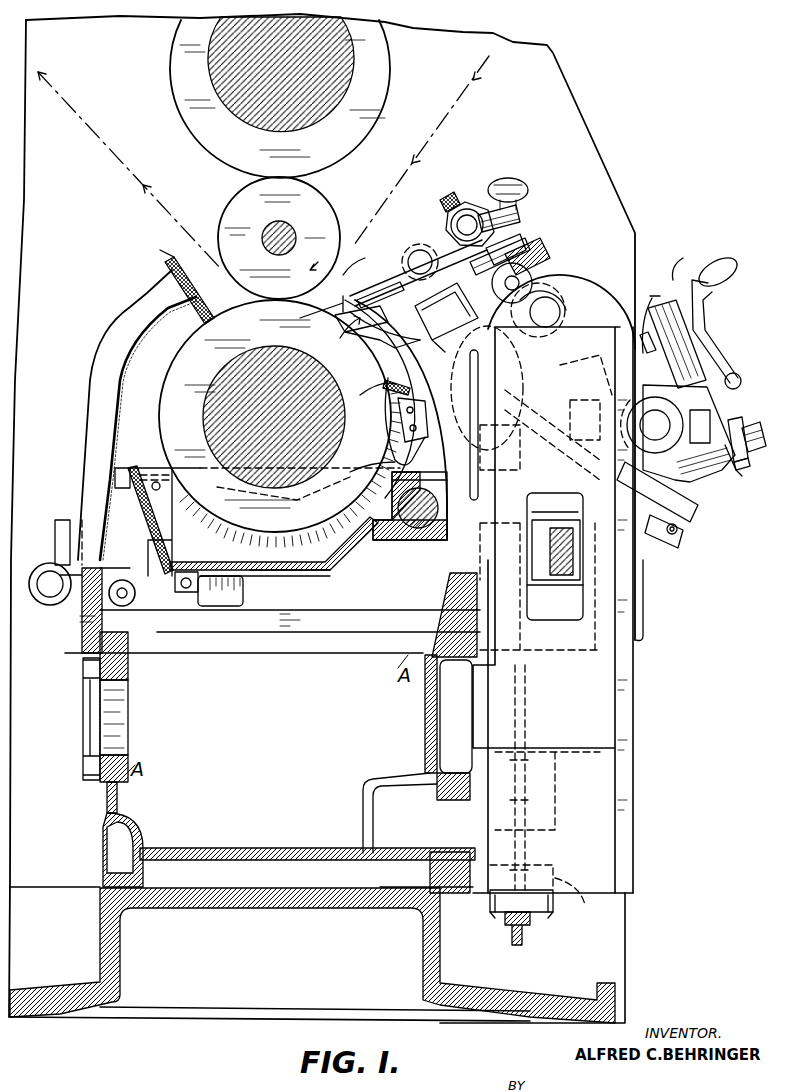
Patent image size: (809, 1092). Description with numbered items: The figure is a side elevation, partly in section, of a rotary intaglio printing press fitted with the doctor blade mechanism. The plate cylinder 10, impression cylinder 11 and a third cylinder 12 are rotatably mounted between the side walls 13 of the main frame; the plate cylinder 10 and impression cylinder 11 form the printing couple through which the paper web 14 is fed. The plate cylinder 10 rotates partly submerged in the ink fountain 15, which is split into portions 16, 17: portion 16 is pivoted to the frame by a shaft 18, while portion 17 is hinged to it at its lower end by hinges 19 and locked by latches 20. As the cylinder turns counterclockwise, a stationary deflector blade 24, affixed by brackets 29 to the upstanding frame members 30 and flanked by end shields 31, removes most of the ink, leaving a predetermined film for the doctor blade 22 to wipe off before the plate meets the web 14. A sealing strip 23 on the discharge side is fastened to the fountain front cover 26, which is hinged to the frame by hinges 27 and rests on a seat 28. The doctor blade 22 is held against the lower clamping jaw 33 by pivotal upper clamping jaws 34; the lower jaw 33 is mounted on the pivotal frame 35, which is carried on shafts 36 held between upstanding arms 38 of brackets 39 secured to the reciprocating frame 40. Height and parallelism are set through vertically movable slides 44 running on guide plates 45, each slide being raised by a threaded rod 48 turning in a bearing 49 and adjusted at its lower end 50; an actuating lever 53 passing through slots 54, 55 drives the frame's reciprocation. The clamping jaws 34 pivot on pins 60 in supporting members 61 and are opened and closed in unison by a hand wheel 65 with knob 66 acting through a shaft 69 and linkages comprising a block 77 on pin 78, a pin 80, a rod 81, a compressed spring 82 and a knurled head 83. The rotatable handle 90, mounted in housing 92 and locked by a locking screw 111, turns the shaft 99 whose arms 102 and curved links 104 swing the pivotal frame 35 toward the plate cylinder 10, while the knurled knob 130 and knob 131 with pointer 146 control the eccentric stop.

The plate cylinder 10 is at (172, 368).
The impression cylinder 11 is at (228, 204).
The cylinder 12 is at (172, 68).
The side walls 13 is at (553, 58).
The paper web 14 is at (440, 122).
The ink fountain 15 is at (300, 584).
The ink fountain portion 16 is at (268, 578).
The ink fountain portion 17 is at (150, 470).
The shaft 18 is at (412, 540).
The hinges 19 is at (183, 593).
The latches 20 is at (170, 508).
The doctor blade 22 is at (360, 299).
The sealing strip 23 is at (196, 276).
The deflector blade 24 is at (382, 383).
The fountain front cover 26 is at (105, 343).
The hinges 27 is at (48, 566).
The seat 28 is at (98, 568).
The brackets 29 is at (398, 420).
The upstanding frame members 30 is at (448, 466).
The end shields 31 is at (366, 477).
The lower clamping jaw 33 is at (380, 286).
The upper clamping jaws 34 is at (370, 268).
The pivotal frame 35 is at (446, 317).
The shafts 36 is at (525, 403).
The upstanding arms 38 is at (521, 435).
The bracket 39 is at (586, 397).
The reciprocating frame 40 is at (690, 513).
The slides 44 is at (627, 679).
The guide plates 45 is at (600, 700).
The threaded rod 48 is at (530, 727).
The bearing 49 is at (549, 893).
The lower end 50 is at (524, 940).
The actuating lever 53 is at (573, 578).
The slot 54 is at (555, 556).
The slot 55 is at (536, 618).
The pins 60 is at (420, 258).
The supporting members 61 is at (377, 324).
The hand wheel 65 is at (521, 212).
The knob 66 is at (508, 178).
The shaft 69 is at (545, 330).
The block 77 is at (545, 262).
The pin 78 is at (522, 283).
The pin 80 is at (467, 222).
The rod 81 is at (525, 252).
The compressed spring 82 is at (495, 255).
The knurled head 83 is at (445, 204).
The rotatable handle 90 is at (717, 264).
The housing 92 is at (654, 309).
The shaft 99 is at (660, 432).
The arms 102 is at (710, 388).
The curved links 104 is at (604, 295).
The locking screw 111 is at (676, 259).
The knurled knob 130 is at (754, 429).
The knob 131 is at (740, 472).
The pointer 146 is at (750, 460).